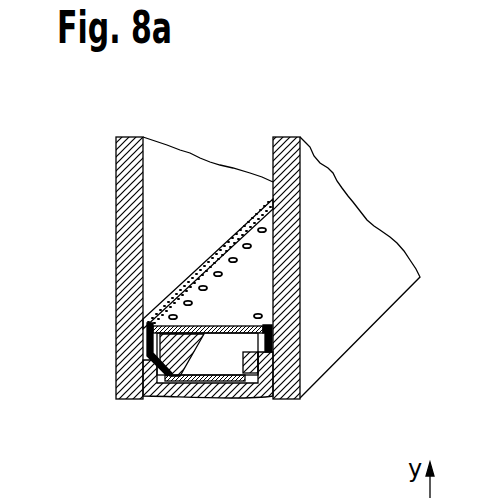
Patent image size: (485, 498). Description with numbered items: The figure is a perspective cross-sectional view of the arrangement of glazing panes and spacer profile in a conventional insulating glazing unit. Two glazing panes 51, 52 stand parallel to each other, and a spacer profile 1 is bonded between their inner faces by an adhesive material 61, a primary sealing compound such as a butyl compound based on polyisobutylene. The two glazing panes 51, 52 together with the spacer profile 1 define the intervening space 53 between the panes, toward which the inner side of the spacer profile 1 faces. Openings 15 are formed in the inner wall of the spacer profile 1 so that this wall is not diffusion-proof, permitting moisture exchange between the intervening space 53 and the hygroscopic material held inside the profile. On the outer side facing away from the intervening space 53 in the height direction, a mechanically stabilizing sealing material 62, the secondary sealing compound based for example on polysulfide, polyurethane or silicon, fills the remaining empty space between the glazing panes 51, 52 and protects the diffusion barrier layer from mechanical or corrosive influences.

The spacer profile 1 is at (236, 320).
The openings 15 is at (189, 300).
The glazing pane 51 is at (122, 249).
The glazing pane 52 is at (298, 190).
The intervening space 53 is at (230, 183).
The adhesive material (primary sealing compound) 61 is at (268, 340).
The sealing material (secondary sealing compound) 62 is at (208, 396).